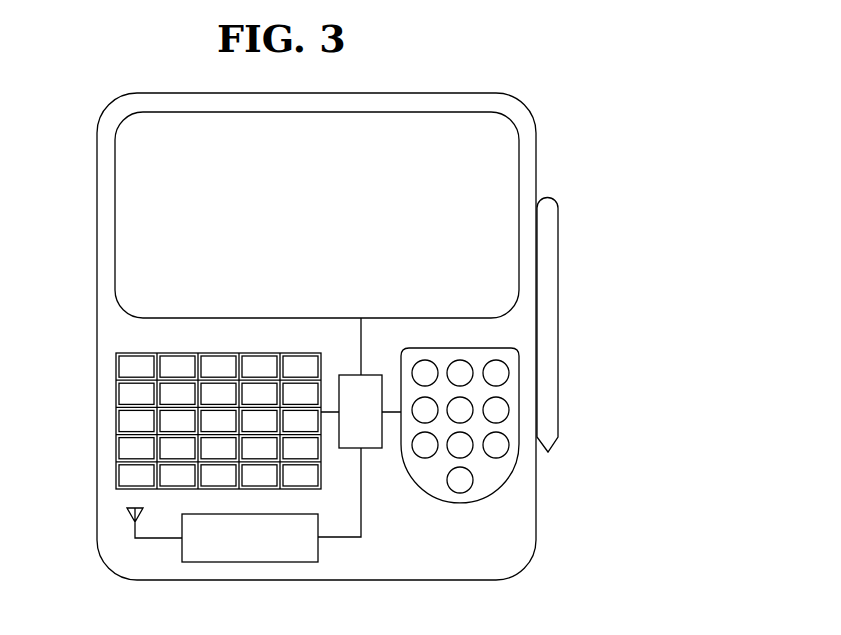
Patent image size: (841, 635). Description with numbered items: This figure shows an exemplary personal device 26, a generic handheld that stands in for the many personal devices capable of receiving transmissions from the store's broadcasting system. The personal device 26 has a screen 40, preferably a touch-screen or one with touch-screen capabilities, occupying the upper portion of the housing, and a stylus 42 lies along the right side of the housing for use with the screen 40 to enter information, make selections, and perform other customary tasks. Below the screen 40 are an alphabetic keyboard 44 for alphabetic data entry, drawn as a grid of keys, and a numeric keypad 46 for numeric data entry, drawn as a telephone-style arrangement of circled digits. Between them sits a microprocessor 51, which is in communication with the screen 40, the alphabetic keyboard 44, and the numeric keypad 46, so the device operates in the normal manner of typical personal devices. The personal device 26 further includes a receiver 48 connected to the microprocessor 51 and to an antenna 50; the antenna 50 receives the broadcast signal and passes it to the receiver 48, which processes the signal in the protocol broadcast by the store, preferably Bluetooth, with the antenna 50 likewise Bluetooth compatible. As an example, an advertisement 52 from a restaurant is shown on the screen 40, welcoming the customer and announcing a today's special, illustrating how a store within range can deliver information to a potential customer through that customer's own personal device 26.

The personal device 26 is at (627, 155).
The screen 40 is at (113, 223).
The stylus 42 is at (547, 401).
The alphabetic keyboard 44 is at (116, 421).
The numeric keypad 46 is at (495, 475).
The receiver 48 is at (258, 562).
The antenna 50 is at (127, 517).
The microprocessor 51 is at (369, 448).
The advertisement 52 is at (473, 157).